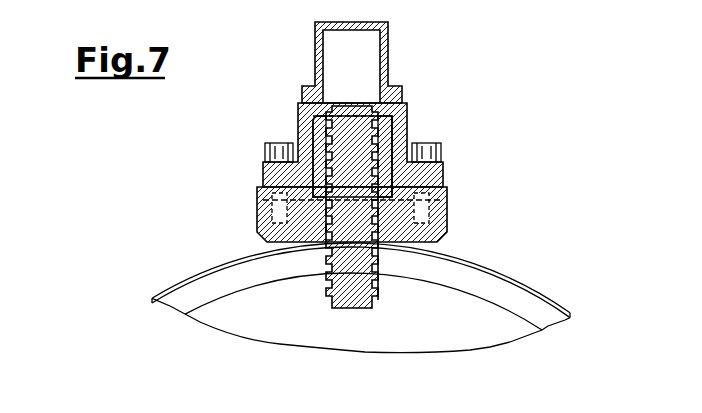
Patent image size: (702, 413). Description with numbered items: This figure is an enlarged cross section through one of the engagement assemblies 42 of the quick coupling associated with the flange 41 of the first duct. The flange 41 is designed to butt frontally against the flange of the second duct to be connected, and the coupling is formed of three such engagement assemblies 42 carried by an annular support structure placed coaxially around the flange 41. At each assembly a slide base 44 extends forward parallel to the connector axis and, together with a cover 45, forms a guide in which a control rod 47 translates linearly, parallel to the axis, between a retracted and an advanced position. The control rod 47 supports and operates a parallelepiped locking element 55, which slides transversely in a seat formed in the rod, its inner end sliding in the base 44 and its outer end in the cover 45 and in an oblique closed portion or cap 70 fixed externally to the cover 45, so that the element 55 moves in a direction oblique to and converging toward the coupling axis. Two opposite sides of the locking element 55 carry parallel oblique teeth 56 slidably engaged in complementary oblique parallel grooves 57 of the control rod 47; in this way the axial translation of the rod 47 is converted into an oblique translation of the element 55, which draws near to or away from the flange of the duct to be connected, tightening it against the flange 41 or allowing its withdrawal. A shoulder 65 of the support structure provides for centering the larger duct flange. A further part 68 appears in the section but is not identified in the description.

The flange 41 is at (443, 333).
The engagement assemblies 42 is at (447, 160).
The slide bases 44 is at (265, 221).
The covers 45 is at (302, 109).
The control rods 47 is at (405, 128).
The locking elements 55 is at (322, 296).
The parallel oblique teeth 56 is at (372, 286).
The oblique parallel grooves 57 is at (408, 138).
The shoulder 65 is at (503, 268).
The wall layer 68 is at (538, 307).
The oblique closed portions or caps 70 is at (389, 46).